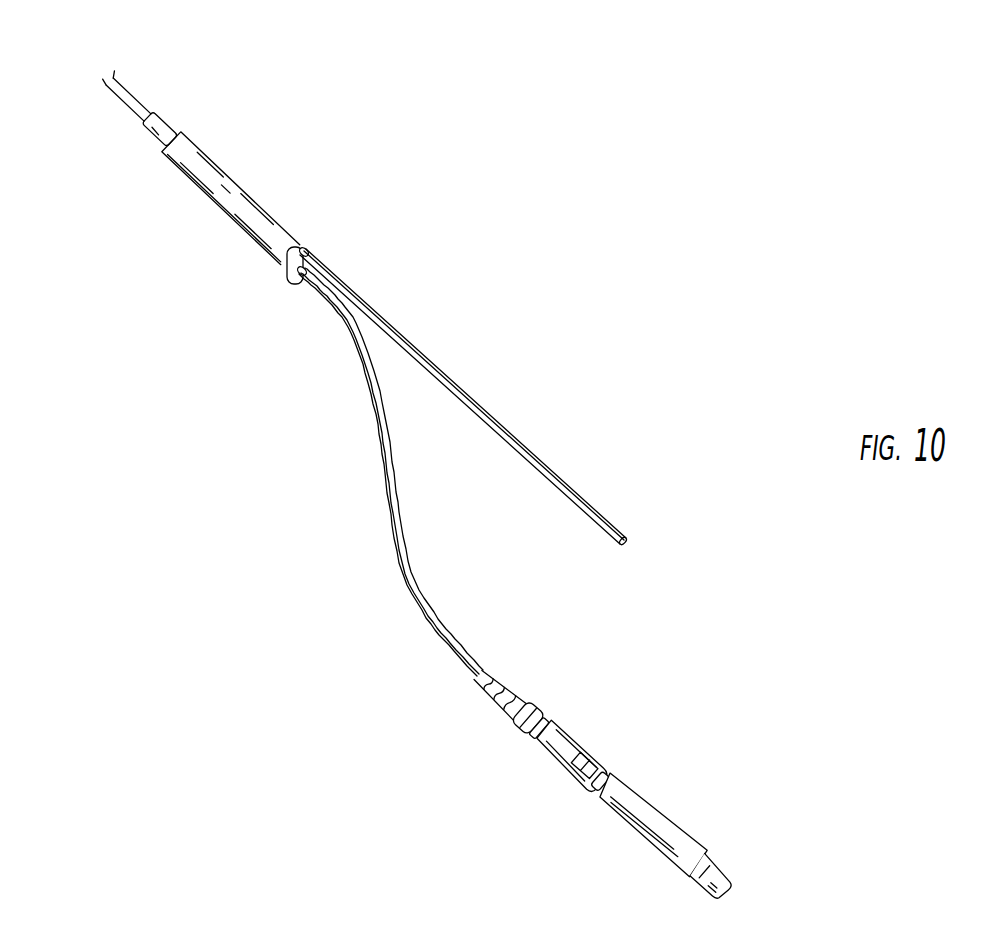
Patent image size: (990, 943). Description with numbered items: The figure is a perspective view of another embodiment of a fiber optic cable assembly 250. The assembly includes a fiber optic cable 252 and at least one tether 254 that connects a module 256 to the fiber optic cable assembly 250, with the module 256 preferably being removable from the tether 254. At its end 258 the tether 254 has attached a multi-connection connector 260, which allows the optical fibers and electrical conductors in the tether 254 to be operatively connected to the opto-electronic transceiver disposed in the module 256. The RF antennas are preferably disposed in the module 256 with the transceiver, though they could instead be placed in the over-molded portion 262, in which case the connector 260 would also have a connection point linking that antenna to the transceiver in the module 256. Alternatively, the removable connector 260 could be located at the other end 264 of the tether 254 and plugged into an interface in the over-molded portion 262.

The fiber optic cable assembly 250 is at (436, 214).
The fiber optic cable 252 is at (483, 408).
The tether 254 is at (404, 545).
The module 256 is at (673, 815).
The end of the tether 258 is at (526, 771).
The multi-connection connector 260 is at (580, 740).
The over-molded portion 262 is at (245, 224).
The other end of the tether 264 is at (297, 283).